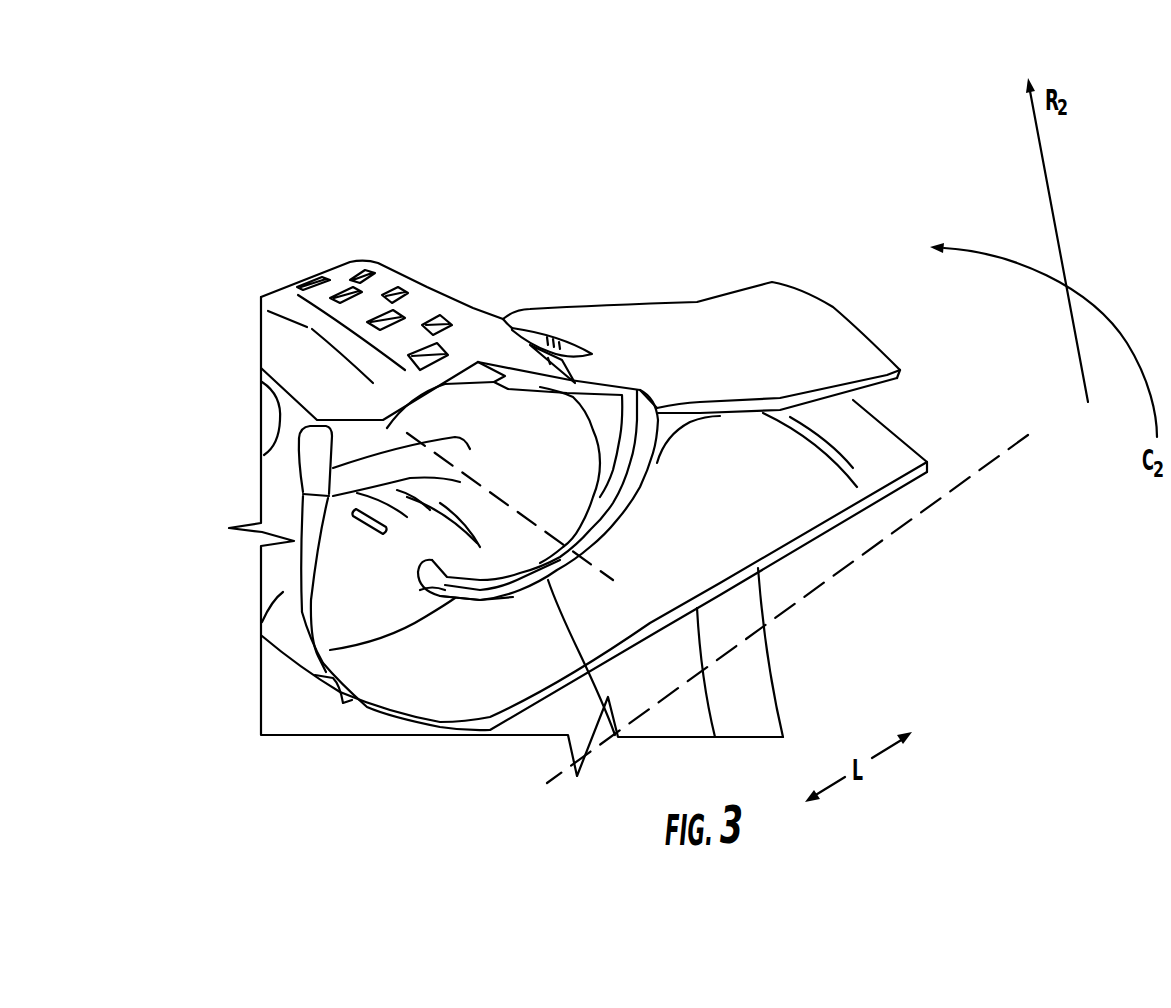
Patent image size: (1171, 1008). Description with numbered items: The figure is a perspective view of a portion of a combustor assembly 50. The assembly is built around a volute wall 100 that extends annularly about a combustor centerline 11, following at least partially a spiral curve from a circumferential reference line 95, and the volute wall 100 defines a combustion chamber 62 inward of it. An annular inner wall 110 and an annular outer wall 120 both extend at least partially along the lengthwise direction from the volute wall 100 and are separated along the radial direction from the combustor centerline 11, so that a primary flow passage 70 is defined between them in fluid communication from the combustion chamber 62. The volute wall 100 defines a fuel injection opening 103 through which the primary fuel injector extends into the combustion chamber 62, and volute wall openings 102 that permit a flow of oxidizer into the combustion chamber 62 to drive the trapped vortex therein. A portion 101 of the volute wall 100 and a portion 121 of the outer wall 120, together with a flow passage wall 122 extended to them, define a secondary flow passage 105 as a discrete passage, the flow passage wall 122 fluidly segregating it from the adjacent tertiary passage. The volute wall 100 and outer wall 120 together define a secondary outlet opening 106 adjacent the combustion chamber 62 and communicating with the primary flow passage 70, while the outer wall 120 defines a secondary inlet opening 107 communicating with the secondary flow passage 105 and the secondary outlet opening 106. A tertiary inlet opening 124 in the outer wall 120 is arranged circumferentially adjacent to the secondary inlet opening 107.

The combustor centerline 11 is at (993, 450).
The combustor assembly 50 is at (500, 287).
The combustion chamber 62 is at (470, 449).
The primary flow passage 70 is at (860, 397).
The circumferential reference line 95 is at (613, 737).
The volute wall 100 is at (252, 535).
The portion of the volute wall 101 is at (488, 565).
The volute wall openings 102 is at (347, 293).
The fuel injection opening 103 is at (265, 428).
The secondary flow passage 105 is at (560, 527).
The secondary outlet opening 106 is at (394, 549).
The secondary inlet opening 107 is at (533, 333).
The inner wall 110 is at (838, 508).
The outer wall 120 is at (797, 283).
The portion of the outer wall 121 is at (473, 602).
The flow passage wall 122 is at (377, 528).
The tertiary inlet opening 124 is at (558, 362).